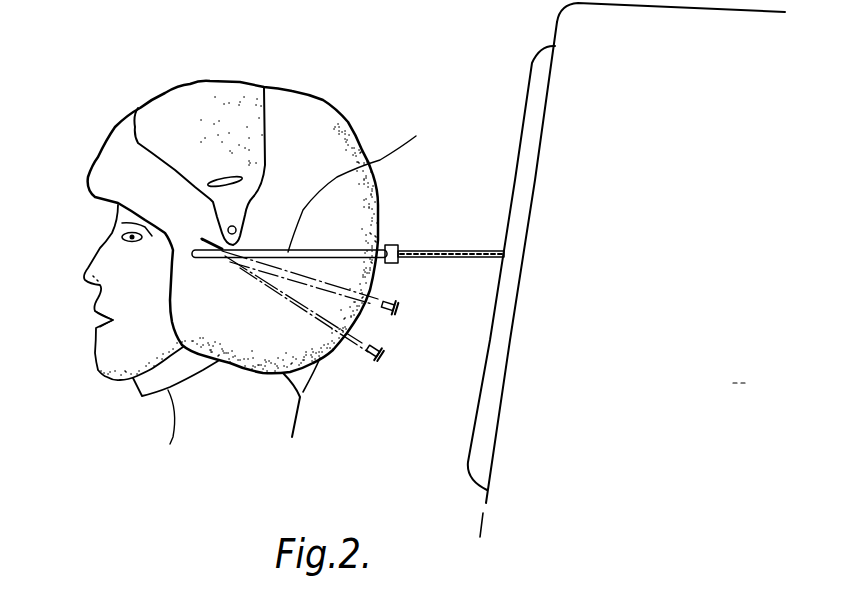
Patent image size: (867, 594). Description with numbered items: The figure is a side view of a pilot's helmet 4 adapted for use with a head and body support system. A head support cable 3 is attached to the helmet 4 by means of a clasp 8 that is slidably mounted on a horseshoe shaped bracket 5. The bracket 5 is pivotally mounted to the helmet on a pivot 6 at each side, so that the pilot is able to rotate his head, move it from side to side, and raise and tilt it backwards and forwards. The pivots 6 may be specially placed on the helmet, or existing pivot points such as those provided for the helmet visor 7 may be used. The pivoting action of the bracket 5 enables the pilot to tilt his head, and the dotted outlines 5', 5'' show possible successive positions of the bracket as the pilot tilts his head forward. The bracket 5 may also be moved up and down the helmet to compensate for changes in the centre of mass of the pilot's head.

The head support cable 3 is at (496, 257).
The pilot's helmet 4 is at (316, 98).
The horseshoe shaped bracket 5 is at (357, 188).
The dotted outline of bracket position 5' is at (321, 264).
The dotted outline of bracket position 5'' is at (367, 388).
The pivot 6 is at (117, 134).
The helmet visor 7 is at (225, 92).
The clasp 8 is at (395, 245).